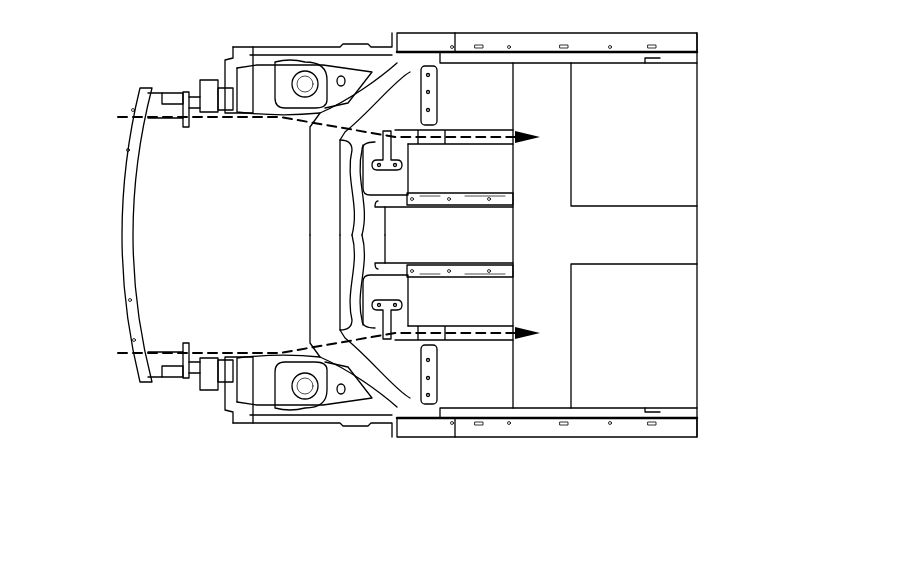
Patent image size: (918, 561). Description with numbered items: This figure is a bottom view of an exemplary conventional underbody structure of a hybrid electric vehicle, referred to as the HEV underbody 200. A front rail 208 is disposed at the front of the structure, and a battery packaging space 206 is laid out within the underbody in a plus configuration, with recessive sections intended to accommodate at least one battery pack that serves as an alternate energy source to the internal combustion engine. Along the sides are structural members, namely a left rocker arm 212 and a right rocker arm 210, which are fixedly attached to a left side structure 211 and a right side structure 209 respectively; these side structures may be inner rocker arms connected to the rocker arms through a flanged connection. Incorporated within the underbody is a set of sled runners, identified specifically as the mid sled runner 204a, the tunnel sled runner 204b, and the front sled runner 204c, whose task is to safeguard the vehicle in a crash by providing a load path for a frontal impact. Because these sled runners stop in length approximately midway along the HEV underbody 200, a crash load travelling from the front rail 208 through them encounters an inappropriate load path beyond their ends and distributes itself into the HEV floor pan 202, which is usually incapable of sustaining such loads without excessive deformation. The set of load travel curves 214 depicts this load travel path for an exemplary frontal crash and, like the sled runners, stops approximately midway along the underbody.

The HEV underbody 200 is at (148, 44).
The HEV floor pan 202 is at (697, 354).
The mid sled runner 204a is at (497, 130).
The tunnel sled runner 204b is at (497, 193).
The front sled runner 204c is at (428, 147).
The battery packaging space 206 is at (680, 238).
The front rail 208 is at (258, 120).
The right side structure 209 is at (593, 63).
The right rocker arm 210 is at (660, 33).
The left side structure 211 is at (585, 408).
The left rocker arm 212 is at (650, 437).
The load travel curves 214 is at (130, 117).